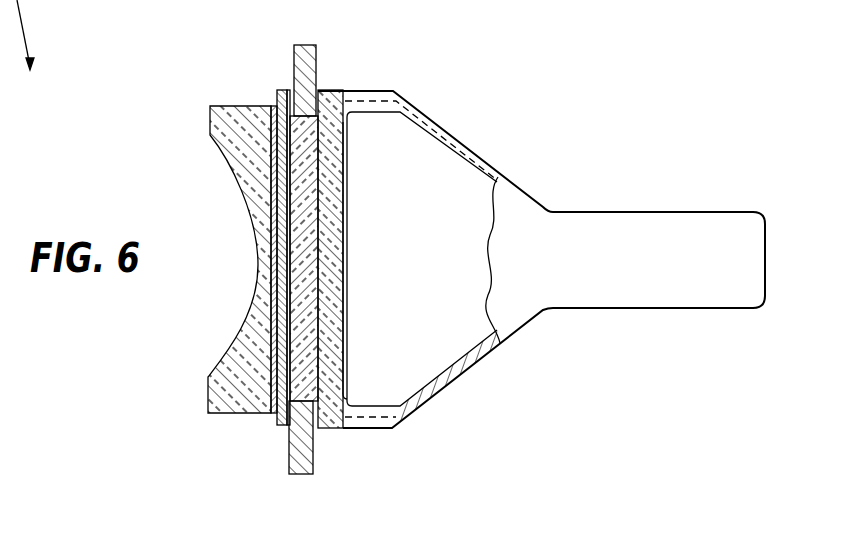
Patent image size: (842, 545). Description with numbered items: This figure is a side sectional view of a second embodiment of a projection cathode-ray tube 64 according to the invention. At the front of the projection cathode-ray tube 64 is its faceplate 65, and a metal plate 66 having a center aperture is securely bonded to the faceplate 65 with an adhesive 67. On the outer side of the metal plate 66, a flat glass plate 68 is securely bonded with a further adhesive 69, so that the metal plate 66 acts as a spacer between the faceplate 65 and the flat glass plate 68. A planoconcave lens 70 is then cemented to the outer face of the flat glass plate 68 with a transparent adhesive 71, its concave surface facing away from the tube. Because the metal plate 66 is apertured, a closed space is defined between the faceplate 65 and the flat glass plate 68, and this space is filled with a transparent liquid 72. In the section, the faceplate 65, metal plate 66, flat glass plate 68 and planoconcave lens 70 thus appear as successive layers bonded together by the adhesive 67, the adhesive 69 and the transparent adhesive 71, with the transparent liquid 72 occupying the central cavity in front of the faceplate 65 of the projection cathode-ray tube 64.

The projection cathode-ray tube 64 is at (603, 215).
The faceplate 65 is at (327, 283).
The metal plate 66 is at (308, 47).
The adhesive 67 is at (318, 92).
The flat glass plate 68 is at (277, 100).
The adhesive 69 is at (288, 90).
The planoconcave lens 70 is at (222, 105).
The transparent adhesive 71 is at (272, 100).
The transparent liquid 72 is at (298, 192).